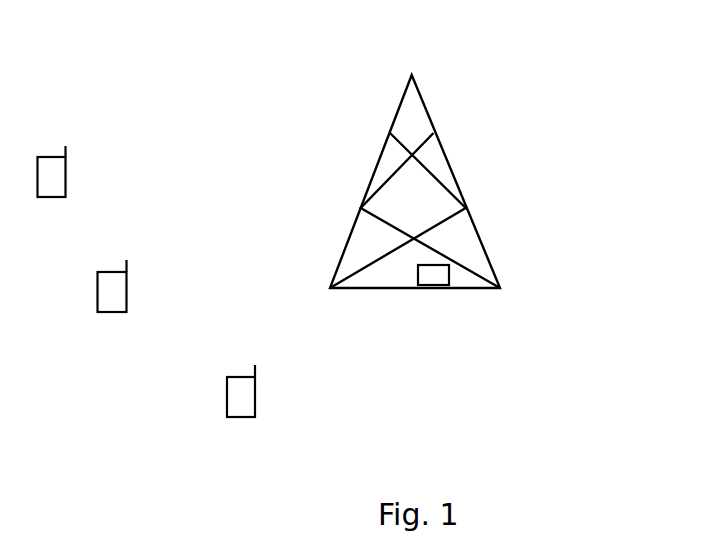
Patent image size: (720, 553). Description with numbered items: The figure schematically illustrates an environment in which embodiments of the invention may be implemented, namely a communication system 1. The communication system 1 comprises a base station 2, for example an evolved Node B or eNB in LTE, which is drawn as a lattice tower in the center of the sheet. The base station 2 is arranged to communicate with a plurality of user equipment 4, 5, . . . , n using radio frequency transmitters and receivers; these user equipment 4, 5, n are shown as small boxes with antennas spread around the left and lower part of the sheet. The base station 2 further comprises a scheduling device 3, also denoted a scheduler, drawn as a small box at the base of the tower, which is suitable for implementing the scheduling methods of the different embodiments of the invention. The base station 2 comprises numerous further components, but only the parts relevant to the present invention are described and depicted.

The communication system 1 is at (615, 77).
The base station 2 is at (365, 125).
The scheduling device 3 is at (443, 278).
The user equipment 4 is at (62, 186).
The user equipment 5 is at (122, 301).
The user equipment n is at (250, 406).